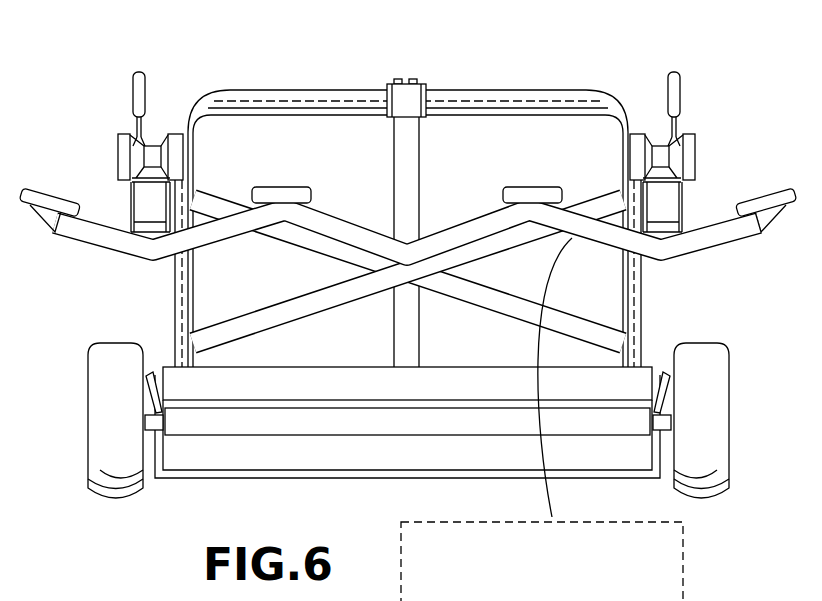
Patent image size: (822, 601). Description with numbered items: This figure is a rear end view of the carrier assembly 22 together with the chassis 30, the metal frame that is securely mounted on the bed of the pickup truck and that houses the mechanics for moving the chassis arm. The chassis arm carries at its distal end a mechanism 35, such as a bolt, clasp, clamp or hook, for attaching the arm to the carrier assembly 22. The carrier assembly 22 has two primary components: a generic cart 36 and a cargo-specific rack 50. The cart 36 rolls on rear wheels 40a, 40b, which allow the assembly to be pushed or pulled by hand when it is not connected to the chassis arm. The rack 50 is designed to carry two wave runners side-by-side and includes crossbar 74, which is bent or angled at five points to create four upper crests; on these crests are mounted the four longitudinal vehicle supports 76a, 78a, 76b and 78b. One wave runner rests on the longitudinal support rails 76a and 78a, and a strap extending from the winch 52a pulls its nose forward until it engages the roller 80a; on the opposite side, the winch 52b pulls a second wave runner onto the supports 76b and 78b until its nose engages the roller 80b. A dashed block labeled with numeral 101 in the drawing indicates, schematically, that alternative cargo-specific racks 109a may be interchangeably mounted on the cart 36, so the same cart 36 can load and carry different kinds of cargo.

The carrier assembly 22 is at (309, 56).
The mechanism 35 is at (423, 80).
The rack 50 is at (355, 252).
The winch 52a is at (118, 147).
The winch 52b is at (695, 147).
The roller 80a is at (150, 143).
The roller 80b is at (664, 143).
The crossbar 74 is at (82, 247).
The longitudinal vehicle support 76a is at (84, 156).
The longitudinal vehicle support 76b is at (548, 154).
The longitudinal vehicle support 78a is at (317, 154).
The longitudinal vehicle support 78b is at (768, 195).
The cart 36 is at (462, 378).
The chassis 30 is at (213, 464).
The rear wheel 40a is at (142, 306).
The rear wheel 40b is at (700, 342).
The alternative cargo-specific rack 109a is at (786, 577).
The cargo carrier 101 is at (88, 585).